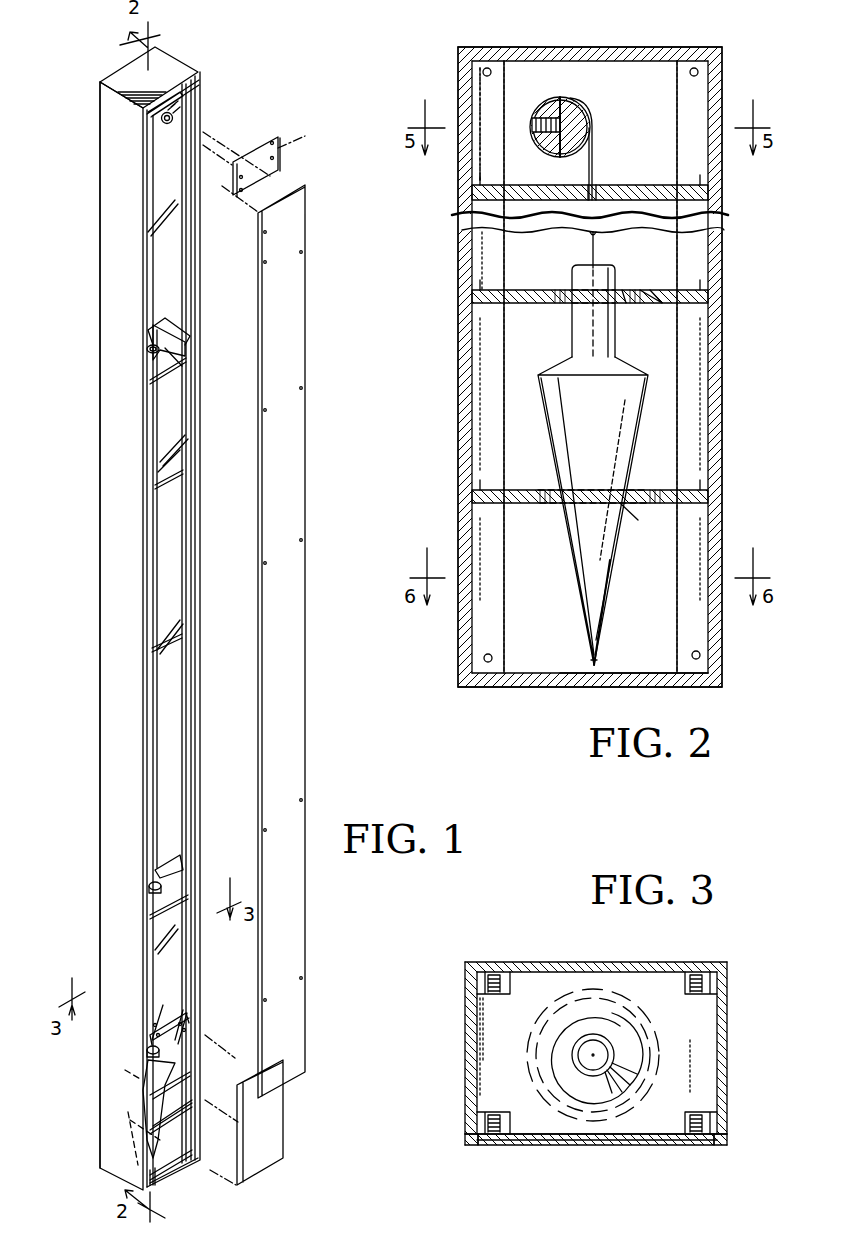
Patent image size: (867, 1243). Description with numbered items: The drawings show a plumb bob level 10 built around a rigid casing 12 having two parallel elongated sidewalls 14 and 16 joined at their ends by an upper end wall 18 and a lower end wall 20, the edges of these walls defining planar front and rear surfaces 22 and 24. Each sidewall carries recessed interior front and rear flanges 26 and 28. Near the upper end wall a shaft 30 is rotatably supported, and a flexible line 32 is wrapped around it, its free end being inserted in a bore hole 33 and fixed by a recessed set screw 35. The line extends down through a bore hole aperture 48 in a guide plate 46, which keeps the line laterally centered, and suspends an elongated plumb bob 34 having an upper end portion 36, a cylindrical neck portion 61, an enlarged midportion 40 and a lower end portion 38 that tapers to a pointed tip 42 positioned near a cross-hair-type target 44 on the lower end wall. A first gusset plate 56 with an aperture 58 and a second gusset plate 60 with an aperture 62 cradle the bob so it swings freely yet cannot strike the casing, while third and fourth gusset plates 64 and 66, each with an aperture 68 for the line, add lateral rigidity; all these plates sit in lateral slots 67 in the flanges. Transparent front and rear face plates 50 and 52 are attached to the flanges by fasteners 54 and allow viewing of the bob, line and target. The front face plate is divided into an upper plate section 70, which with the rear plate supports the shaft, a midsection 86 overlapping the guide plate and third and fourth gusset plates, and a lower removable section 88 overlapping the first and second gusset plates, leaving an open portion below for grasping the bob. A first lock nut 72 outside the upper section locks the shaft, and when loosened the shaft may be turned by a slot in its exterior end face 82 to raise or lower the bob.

In FIG. 1, the plumb bob level 10 is at (56, 305).
In FIG. 2, the plumb bob level 10 is at (440, 425).
In FIG. 1, the casing 12 is at (98, 133).
In FIG. 3, the casing 12 is at (466, 1115).
In FIG. 1, the sidewall 14 is at (108, 188).
In FIG. 2, the sidewall 14 is at (466, 348).
In FIG. 3, the sidewall 14 is at (470, 1072).
In FIG. 1, the sidewall 16 is at (206, 96).
In FIG. 2, the sidewall 16 is at (720, 356).
In FIG. 3, the sidewall 16 is at (727, 1054).
In FIG. 1, the upper end wall 18 is at (170, 70).
In FIG. 2, the upper end wall 18 is at (614, 47).
In FIG. 1, the lower end wall 20 is at (162, 1178).
In FIG. 2, the lower end wall 20 is at (612, 688).
In FIG. 1, the front surface 22 is at (180, 90).
In FIG. 1, the rear surface 24 is at (116, 80).
In FIG. 3, the front flange 26 is at (480, 1146).
In FIG. 2, the rear flange 28 is at (483, 95).
In FIG. 3, the rear flange 28 is at (503, 976).
In FIG. 2, the shaft 30 is at (580, 112).
In FIG. 1, the flexible line 32 is at (158, 746).
In FIG. 2, the flexible line 32 is at (596, 152).
In FIG. 2, the bore hole 33 is at (562, 96).
In FIG. 1, the plumb bob 34 is at (150, 1115).
In FIG. 2, the plumb bob 34 is at (605, 441).
In FIG. 3, the plumb bob 34 is at (628, 1060).
In FIG. 2, the set screw 35 is at (545, 110).
In FIG. 2, the upper end portion 36 is at (600, 266).
In FIG. 3, the upper end portion 36 is at (588, 1035).
In FIG. 2, the lower end portion 38 is at (605, 608).
In FIG. 2, the midportion 40 is at (622, 412).
In FIG. 2, the pointed tip 42 is at (600, 658).
In FIG. 1, the cross-hair-type target 44 is at (170, 1160).
In FIG. 2, the cross-hair-type target 44 is at (592, 676).
In FIG. 2, the guide plate 46 is at (700, 200).
In FIG. 2, the bore hole aperture 48 is at (606, 200).
In FIG. 1, the front face plate 50 is at (276, 153).
In FIG. 3, the front face plate 50 is at (550, 1146).
In FIG. 3, the rear face plate 52 is at (614, 962).
In FIG. 1, the fasteners 54 is at (193, 325).
In FIG. 2, the fasteners 54 is at (487, 68).
In FIG. 3, the fasteners 54 is at (490, 983).
In FIG. 1, the first gusset plate 56 is at (170, 1104).
In FIG. 2, the first gusset plate 56 is at (700, 504).
In FIG. 1, the aperture 58 is at (168, 1125).
In FIG. 2, the aperture 58 is at (636, 503).
In FIG. 1, the second gusset plate 60 is at (165, 1030).
In FIG. 2, the second gusset plate 60 is at (668, 305).
In FIG. 3, the second gusset plate 60 is at (708, 1028).
In FIG. 2, the neck portion 61 is at (590, 327).
In FIG. 1, the aperture 62 is at (148, 1052).
In FIG. 2, the aperture 62 is at (625, 306).
In FIG. 3, the aperture 62 is at (615, 1022).
In FIG. 1, the third gusset plate 64 is at (180, 368).
In FIG. 1, the fourth gusset plate 66 is at (168, 880).
In FIG. 2, the slots 67 is at (476, 186).
In FIG. 1, the aperture 68 is at (147, 349).
In FIG. 1, the upper plate section 70 is at (198, 120).
In FIG. 1, the first lock nut 72 is at (160, 118).
In FIG. 1, the exterior end face 82 is at (178, 116).
In FIG. 1, the midsection 86 is at (172, 458).
In FIG. 3, the midsection 86 is at (604, 1146).
In FIG. 1, the lower removable section 88 is at (168, 1010).